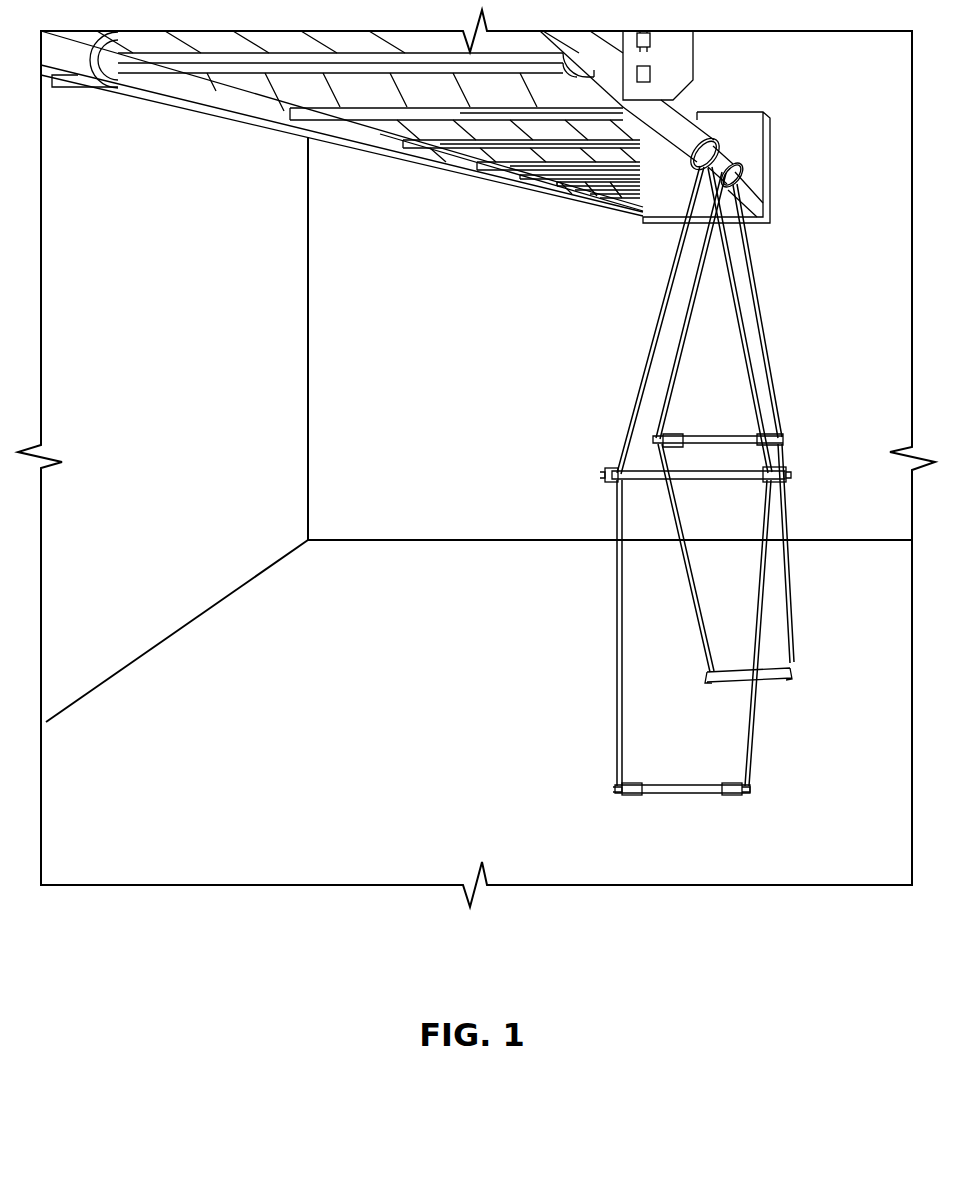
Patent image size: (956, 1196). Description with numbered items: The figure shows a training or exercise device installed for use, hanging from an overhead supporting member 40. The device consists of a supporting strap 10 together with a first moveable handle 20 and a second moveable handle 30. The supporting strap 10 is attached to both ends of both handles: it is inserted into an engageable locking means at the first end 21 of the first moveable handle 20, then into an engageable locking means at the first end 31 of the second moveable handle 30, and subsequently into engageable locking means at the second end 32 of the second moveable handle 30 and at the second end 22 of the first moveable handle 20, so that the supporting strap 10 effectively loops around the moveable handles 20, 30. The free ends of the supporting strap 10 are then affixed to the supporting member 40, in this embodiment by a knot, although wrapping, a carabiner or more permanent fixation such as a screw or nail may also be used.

The supporting strap 10 is at (616, 618).
The first moveable handle 20 is at (641, 468).
The first end of the first moveable handle 21 is at (606, 476).
The second end of the first moveable handle 22 is at (780, 474).
The second moveable handle 30 is at (683, 793).
The first end of the second moveable handle 31 is at (614, 788).
The second end of the second moveable handle 32 is at (752, 788).
The supporting member 40 is at (688, 128).